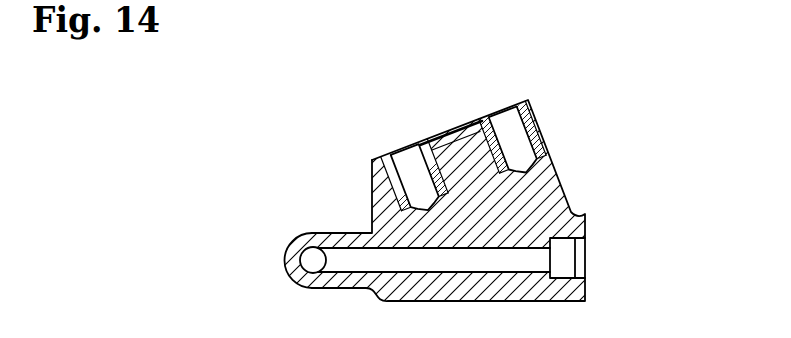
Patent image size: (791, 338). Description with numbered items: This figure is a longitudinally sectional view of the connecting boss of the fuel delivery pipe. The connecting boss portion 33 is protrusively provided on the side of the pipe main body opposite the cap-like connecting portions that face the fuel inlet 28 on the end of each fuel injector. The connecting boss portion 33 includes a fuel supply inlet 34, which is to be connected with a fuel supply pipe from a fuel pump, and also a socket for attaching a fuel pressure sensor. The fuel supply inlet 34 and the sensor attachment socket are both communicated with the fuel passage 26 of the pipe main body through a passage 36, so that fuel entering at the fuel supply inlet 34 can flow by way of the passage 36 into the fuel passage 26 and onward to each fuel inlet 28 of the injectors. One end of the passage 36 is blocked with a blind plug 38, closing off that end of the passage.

The fuel passage 26 is at (307, 258).
The fuel inlet 28 is at (305, 235).
The connecting boss portion 33 is at (559, 177).
The fuel supply inlet 34 is at (458, 152).
The passage 36 is at (376, 268).
The blind plug 38 is at (577, 262).